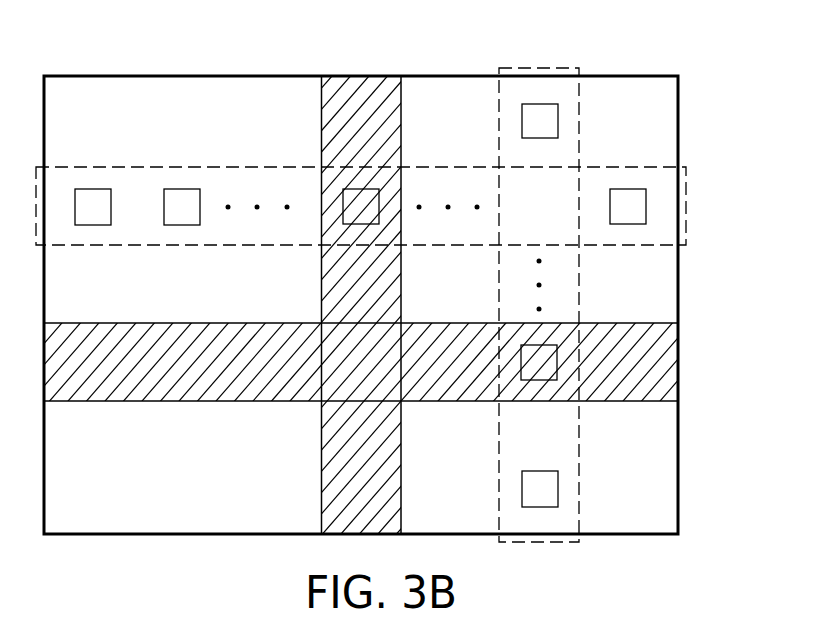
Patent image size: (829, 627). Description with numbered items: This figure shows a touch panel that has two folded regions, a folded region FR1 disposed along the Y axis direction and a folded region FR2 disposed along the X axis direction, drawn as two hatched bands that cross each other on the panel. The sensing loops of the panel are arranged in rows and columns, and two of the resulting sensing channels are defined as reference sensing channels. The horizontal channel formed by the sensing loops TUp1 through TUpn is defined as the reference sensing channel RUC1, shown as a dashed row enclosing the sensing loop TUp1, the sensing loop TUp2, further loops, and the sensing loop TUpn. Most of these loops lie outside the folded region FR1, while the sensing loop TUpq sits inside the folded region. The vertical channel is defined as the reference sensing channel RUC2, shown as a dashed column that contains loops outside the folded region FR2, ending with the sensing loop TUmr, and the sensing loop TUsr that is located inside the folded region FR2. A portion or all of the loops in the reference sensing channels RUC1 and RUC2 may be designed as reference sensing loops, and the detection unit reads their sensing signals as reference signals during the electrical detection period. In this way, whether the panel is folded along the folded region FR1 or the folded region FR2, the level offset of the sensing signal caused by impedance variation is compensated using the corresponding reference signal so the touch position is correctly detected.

The folded region FR1 is at (367, 103).
The folded region FR2 is at (623, 354).
The reference sensing channel RUC1 is at (688, 208).
The reference sensing channel RUC2 is at (541, 67).
The sensing loop TUp1 is at (93, 189).
The sensing loop TUp2 is at (182, 189).
The sensing loop TUpq is at (380, 200).
The sensing loop TUpn is at (558, 118).
The sensing loop TUsr is at (535, 380).
The sensing loop TUmr is at (558, 489).